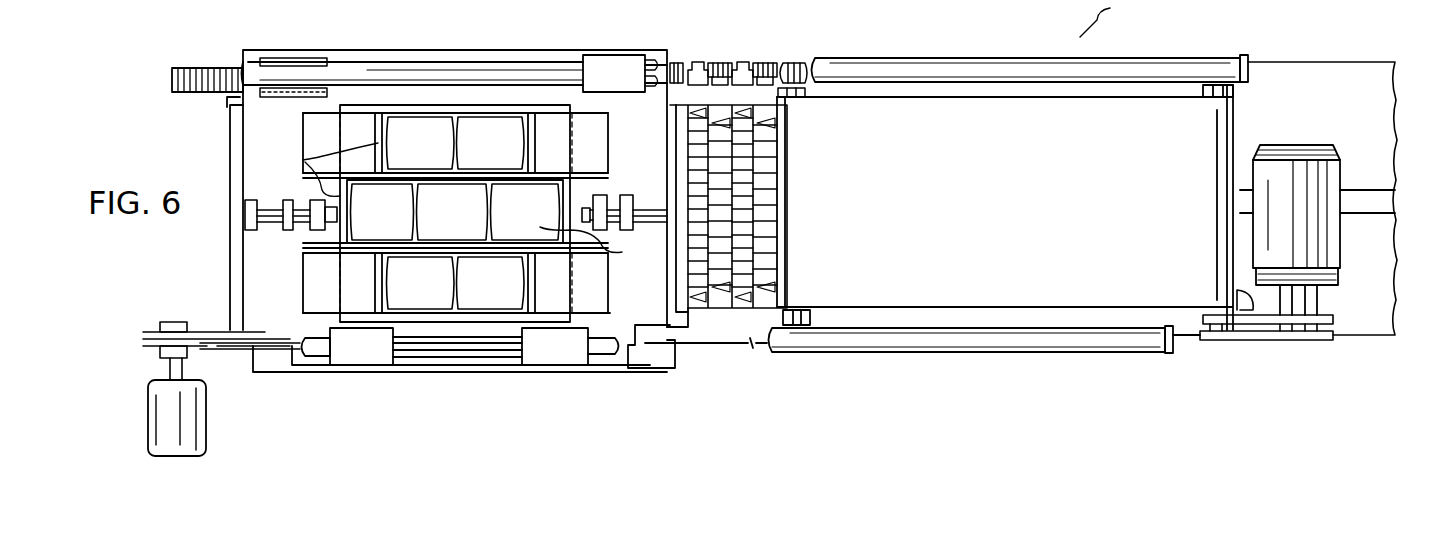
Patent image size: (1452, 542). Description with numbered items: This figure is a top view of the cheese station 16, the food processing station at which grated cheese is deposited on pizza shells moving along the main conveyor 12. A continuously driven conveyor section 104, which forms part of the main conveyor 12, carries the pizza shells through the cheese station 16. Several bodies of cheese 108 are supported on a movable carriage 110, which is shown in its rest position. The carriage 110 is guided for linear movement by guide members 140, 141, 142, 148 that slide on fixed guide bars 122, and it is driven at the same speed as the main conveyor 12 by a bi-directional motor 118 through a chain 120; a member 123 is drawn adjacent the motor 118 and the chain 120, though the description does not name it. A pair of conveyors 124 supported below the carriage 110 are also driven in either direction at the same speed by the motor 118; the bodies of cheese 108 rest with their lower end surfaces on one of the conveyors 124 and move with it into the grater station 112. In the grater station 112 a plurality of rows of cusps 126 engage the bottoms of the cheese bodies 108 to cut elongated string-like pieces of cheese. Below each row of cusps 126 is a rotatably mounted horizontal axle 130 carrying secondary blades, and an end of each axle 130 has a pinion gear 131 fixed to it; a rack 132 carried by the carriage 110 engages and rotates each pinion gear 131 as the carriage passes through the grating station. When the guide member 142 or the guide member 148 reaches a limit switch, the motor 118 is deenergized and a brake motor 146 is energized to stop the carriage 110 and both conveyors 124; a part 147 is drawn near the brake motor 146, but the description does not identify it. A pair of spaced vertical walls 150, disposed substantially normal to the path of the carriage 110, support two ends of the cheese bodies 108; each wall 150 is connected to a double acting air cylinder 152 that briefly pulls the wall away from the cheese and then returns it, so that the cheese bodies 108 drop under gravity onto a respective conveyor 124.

The main conveyor 12 is at (1356, 42).
The cheese station 16 is at (1112, 22).
The conveyor section 104 is at (1392, 193).
The bodies of cheese 108 is at (450, 185).
The carriage 110 is at (295, 121).
The grater station 112 is at (800, 200).
The bi-directional motor 118 is at (207, 409).
The chain 120 is at (1262, 343).
The guide bars 122 is at (472, 38).
The piston rod 123 is at (205, 331).
The conveyors 124 is at (1016, 190).
The cusps 126 is at (762, 117).
The axle 130 is at (763, 78).
The pinion gear 131 is at (721, 62).
The rack 132 is at (172, 80).
The guide member 140 is at (384, 354).
The guide member 141 is at (562, 354).
The guide member 142 is at (614, 56).
The brake motor 146 is at (1302, 148).
The bracket 147 is at (1236, 295).
The guide member 148 is at (292, 59).
The vertical walls 150 is at (460, 208).
The double acting air cylinders 152 is at (647, 198).